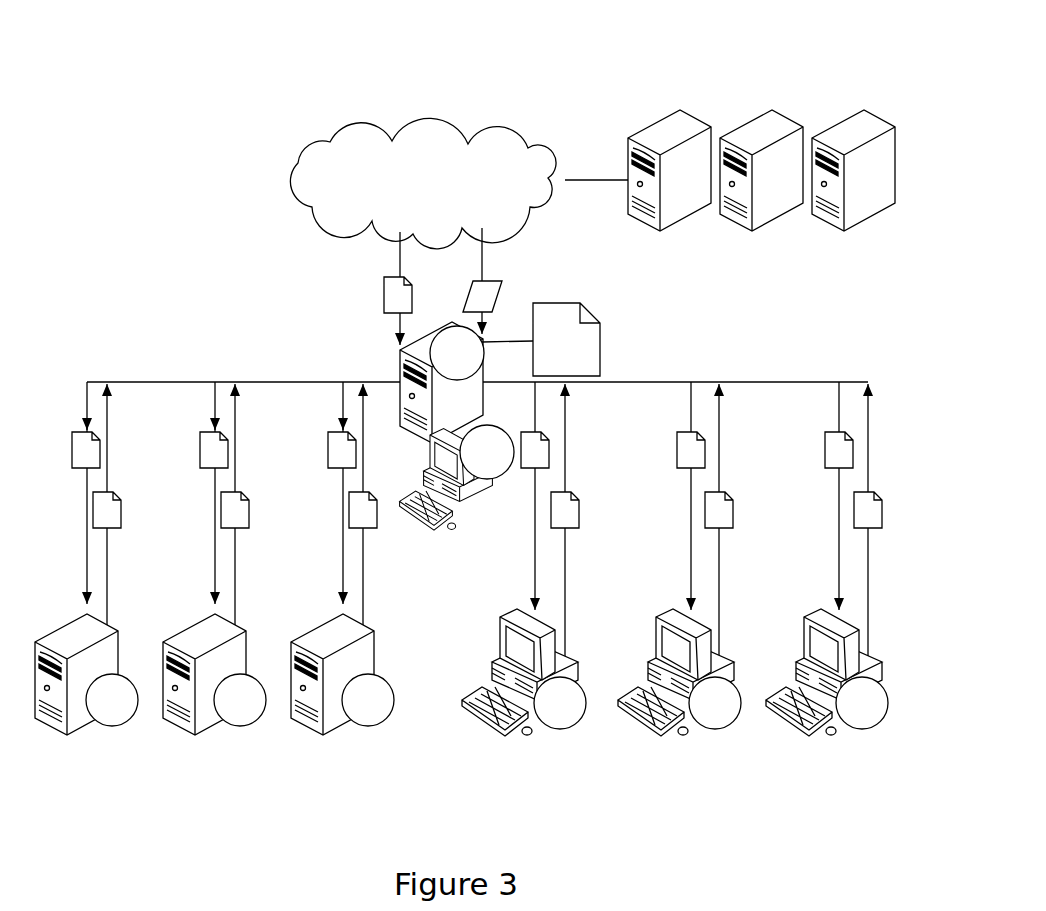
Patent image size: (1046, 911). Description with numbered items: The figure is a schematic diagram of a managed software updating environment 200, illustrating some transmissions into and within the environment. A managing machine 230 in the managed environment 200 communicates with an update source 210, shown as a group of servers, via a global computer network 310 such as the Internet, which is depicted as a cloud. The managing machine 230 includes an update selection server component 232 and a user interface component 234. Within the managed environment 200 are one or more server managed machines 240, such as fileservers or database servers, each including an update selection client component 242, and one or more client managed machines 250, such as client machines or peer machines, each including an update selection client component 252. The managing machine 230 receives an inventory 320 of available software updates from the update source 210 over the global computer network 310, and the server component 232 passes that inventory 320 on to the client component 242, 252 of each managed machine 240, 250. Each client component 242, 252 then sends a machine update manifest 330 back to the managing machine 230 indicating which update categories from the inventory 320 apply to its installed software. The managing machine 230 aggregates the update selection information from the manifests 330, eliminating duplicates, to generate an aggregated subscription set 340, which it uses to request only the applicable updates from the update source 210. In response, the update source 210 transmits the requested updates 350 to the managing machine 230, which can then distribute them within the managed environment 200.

The managed environment 200 is at (178, 256).
The update source 210 is at (650, 77).
The managing machine 230 is at (363, 330).
The update selection server component 232 is at (467, 375).
The user interface component 234 is at (495, 480).
The server managed machines 240 is at (199, 819).
The update selection client component 242 is at (108, 727).
The client managed machines 250 is at (687, 827).
The update selection client component 252 is at (556, 730).
The global computer network 310 is at (315, 129).
The inventory 320 is at (384, 293).
The machine update manifest 330 is at (121, 507).
The aggregated subscription set 340 is at (600, 342).
The requested updates 350 is at (500, 290).